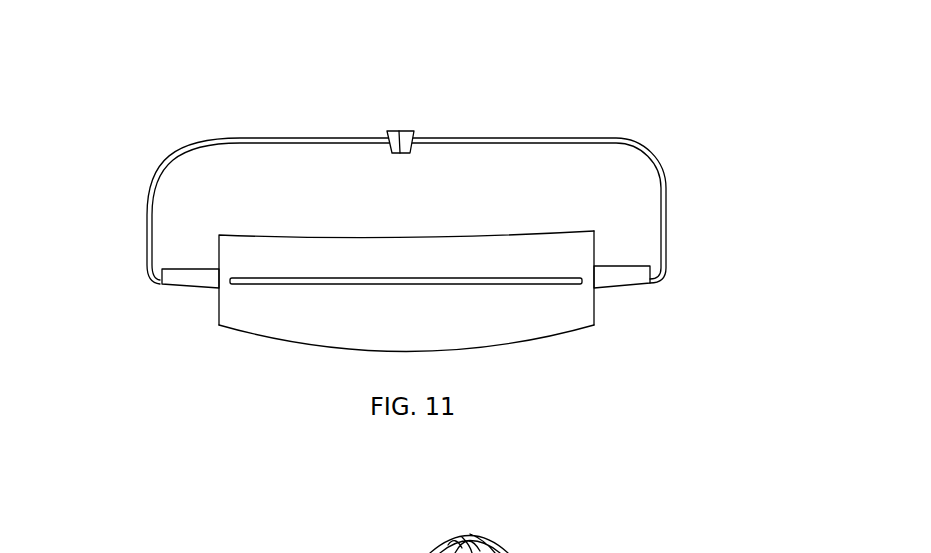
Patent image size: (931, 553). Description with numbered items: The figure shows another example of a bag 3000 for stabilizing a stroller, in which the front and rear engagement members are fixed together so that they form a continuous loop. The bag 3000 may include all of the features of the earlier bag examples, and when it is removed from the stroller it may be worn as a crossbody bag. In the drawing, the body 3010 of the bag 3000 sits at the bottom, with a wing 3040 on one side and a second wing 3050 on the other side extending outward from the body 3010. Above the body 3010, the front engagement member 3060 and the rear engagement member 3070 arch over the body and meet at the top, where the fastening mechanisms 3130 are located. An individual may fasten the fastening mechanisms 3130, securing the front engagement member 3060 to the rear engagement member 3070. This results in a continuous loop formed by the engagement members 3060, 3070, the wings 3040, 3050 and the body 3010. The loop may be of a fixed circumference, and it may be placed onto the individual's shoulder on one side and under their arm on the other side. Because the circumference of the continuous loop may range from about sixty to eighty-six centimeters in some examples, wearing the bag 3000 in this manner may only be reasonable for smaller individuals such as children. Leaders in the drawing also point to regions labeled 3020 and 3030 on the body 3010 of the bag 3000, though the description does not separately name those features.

The bag 3000 is at (411, 379).
The body 3010 is at (273, 340).
The front panel 3020 is at (211, 332).
The front panel side 3030 is at (604, 313).
The wing 3040 is at (172, 285).
The wing 3050 is at (633, 285).
The front engagement member 3060 is at (150, 218).
The rear engagement member 3070 is at (655, 172).
The fastening mechanism 3130 is at (394, 131).